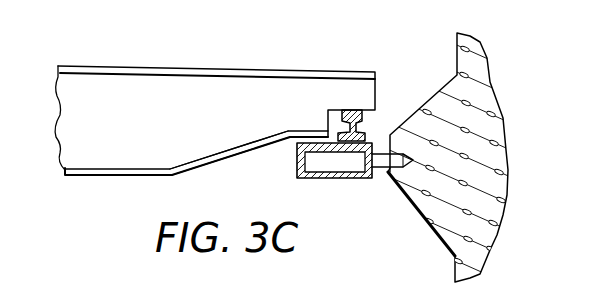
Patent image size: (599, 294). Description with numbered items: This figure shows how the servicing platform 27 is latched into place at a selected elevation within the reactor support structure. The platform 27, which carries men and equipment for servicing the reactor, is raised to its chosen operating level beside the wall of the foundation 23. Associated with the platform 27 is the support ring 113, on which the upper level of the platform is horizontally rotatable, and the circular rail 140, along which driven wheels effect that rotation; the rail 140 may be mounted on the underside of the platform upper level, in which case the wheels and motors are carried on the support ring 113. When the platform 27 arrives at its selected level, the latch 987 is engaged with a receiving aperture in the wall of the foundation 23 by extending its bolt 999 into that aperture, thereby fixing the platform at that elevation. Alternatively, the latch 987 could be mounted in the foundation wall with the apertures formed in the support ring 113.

The servicing platform 27 is at (224, 62).
The support ring 113 is at (294, 157).
The circular rail 140 is at (362, 124).
The latch 987 is at (335, 162).
The bolt 999 is at (382, 172).
The foundation 23 is at (496, 121).